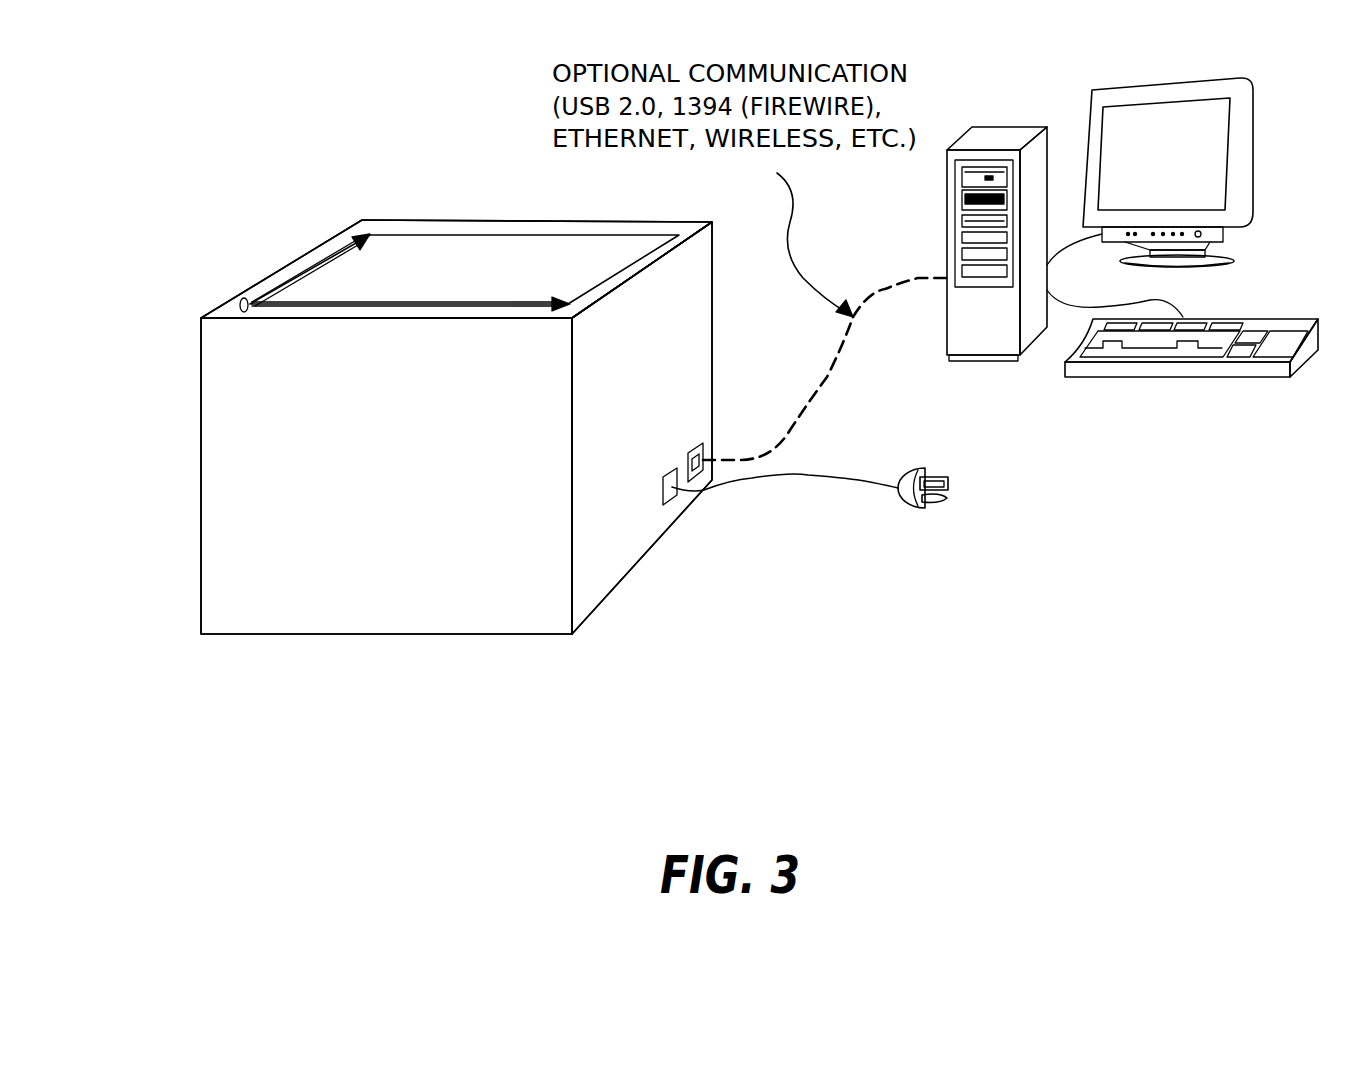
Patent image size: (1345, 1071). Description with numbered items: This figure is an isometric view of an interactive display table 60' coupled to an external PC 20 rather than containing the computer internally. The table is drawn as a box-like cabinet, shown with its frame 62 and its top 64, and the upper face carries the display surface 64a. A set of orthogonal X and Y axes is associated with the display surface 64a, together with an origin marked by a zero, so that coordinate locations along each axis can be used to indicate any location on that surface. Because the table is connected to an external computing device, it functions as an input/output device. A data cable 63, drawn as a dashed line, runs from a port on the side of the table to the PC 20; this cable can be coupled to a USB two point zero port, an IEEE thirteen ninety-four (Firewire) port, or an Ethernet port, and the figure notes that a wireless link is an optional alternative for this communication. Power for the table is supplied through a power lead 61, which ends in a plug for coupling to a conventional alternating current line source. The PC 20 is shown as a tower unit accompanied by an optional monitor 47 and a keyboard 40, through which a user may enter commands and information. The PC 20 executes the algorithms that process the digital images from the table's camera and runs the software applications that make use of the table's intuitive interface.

The interactive display table 60' is at (456, 370).
The housing 62 is at (201, 433).
The coordinate system of touch surface 64 is at (353, 240).
The display surface 64a is at (484, 283).
The data cable 63 is at (837, 360).
The power lead 61 is at (823, 478).
The PC 20 is at (1002, 127).
The monitor 47 is at (1248, 150).
The keyboard 40 is at (1280, 317).